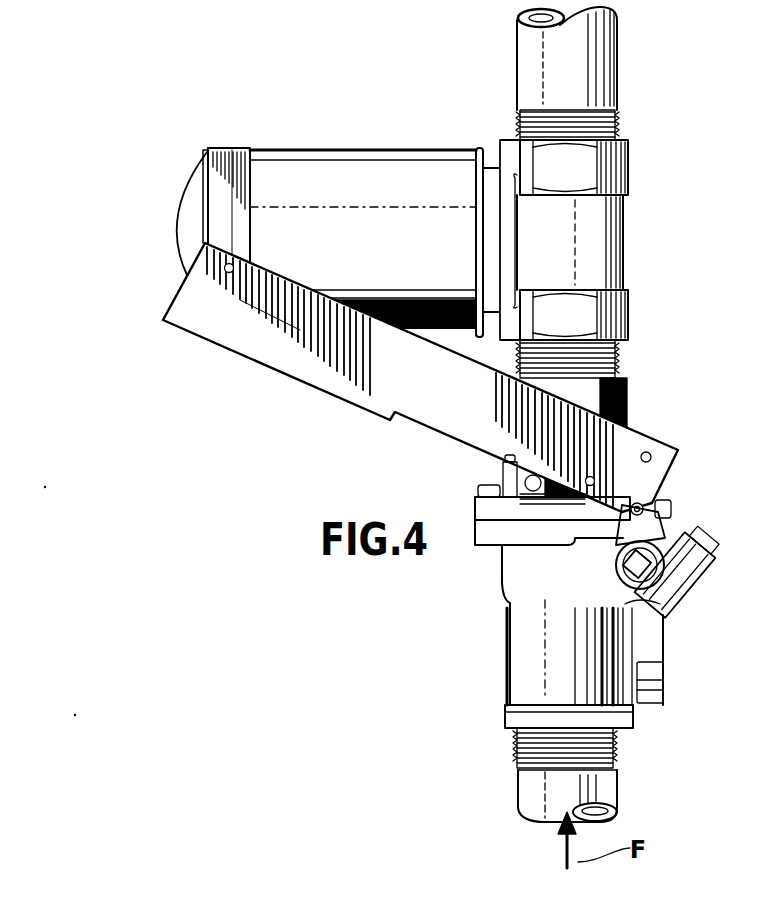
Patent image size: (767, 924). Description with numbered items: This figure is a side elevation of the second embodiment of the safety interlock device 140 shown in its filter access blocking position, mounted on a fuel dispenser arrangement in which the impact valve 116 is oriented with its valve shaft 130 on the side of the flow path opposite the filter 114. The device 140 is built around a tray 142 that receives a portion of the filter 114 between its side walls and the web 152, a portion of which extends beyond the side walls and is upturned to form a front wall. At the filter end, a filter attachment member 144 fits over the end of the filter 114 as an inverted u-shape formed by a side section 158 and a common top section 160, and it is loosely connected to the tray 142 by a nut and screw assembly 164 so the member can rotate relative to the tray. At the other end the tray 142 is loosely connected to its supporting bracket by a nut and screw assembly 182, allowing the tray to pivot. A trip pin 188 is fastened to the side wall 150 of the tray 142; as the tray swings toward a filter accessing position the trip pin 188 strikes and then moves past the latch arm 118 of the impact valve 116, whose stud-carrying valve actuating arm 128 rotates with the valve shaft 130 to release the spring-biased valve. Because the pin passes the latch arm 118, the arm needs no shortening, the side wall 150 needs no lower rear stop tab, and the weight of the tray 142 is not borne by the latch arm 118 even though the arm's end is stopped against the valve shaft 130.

The filter 114 is at (378, 150).
The impact valve 116 is at (503, 650).
The latch arm 118 is at (668, 512).
The valve actuating arm 128 is at (630, 542).
The valve shaft 130 is at (650, 578).
The safety interlock device 140 is at (243, 385).
The tray 142 is at (341, 400).
The filter attachment member 144 is at (205, 208).
The side wall 150 is at (320, 303).
The web 152 is at (213, 343).
The side section 158 is at (232, 190).
The top section 160 is at (232, 148).
The nut and screw assembly 164 is at (250, 254).
The nut and screw assembly 182 is at (651, 455).
The trip pin 188 is at (594, 477).